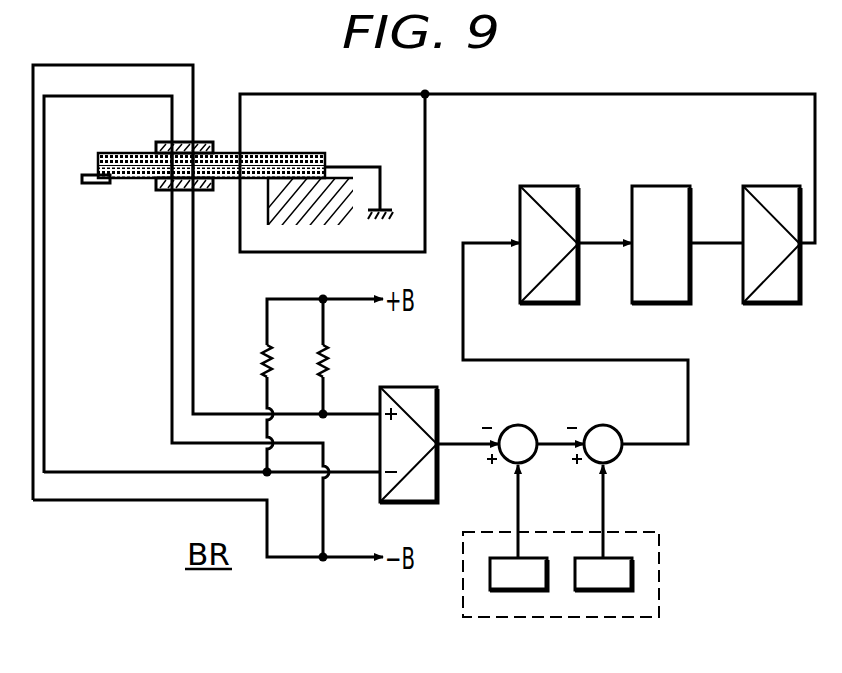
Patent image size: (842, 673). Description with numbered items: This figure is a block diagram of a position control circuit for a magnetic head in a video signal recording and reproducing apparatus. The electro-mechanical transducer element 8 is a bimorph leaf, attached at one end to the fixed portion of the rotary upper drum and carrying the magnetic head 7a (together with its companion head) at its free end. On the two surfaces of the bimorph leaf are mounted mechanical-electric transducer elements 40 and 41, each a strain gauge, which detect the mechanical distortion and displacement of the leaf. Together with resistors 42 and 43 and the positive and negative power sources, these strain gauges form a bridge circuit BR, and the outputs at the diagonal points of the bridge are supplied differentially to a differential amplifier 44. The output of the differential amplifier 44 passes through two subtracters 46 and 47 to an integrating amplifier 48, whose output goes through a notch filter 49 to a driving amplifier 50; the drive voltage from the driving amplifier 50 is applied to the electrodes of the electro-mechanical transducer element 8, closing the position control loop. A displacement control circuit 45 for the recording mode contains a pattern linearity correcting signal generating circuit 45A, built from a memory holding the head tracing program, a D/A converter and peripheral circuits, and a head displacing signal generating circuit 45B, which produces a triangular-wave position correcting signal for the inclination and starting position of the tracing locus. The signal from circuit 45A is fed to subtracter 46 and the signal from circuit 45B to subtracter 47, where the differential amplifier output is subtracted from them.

The magnetic head 7a is at (88, 184).
The electro-mechanical transducer element 8 is at (320, 150).
The mechanical-electric transducer element 40 is at (165, 142).
The mechanical-electric transducer element 41 is at (164, 192).
The resistor 42 is at (262, 354).
The resistor 43 is at (330, 361).
The differential amplifier 44 is at (437, 409).
The displacement control circuit 45 is at (692, 511).
The pattern linearity correcting signal generating circuit 45A is at (533, 590).
The head displacing signal generating circuit 45B is at (620, 590).
The subtracter 46 is at (524, 426).
The subtracter 47 is at (609, 426).
The integrating amplifier 48 is at (556, 186).
The notch filter 49 is at (668, 186).
The driving amplifier 50 is at (773, 186).